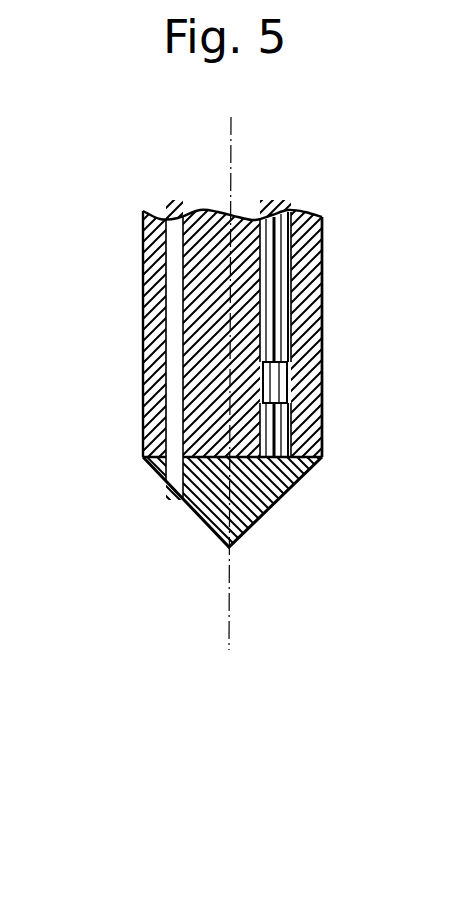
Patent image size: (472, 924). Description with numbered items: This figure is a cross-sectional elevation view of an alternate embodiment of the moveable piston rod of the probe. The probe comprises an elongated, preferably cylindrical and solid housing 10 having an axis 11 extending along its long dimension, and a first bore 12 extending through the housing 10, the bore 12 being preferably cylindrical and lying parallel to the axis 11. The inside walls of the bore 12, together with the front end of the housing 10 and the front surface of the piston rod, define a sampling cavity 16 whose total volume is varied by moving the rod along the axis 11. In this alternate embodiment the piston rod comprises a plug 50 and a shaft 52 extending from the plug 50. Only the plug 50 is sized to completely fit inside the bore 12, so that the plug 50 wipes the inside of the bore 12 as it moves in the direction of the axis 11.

The housing 10 is at (143, 332).
The axis 11 is at (232, 155).
The first bore 12 is at (322, 303).
The sampling cavity 16 is at (272, 438).
The plug 50 is at (268, 378).
The shaft 52 is at (275, 243).